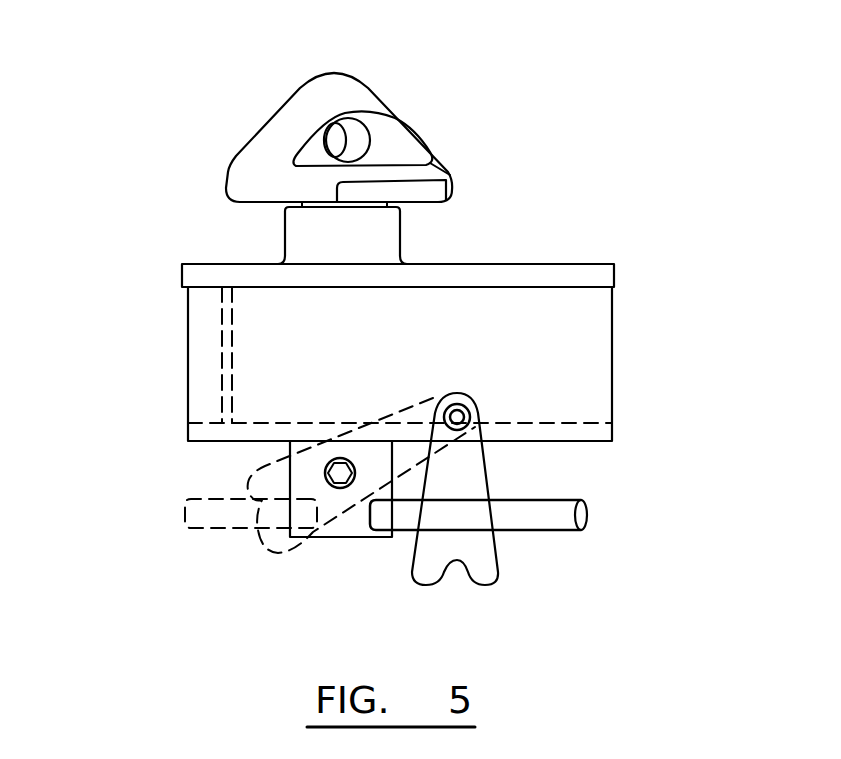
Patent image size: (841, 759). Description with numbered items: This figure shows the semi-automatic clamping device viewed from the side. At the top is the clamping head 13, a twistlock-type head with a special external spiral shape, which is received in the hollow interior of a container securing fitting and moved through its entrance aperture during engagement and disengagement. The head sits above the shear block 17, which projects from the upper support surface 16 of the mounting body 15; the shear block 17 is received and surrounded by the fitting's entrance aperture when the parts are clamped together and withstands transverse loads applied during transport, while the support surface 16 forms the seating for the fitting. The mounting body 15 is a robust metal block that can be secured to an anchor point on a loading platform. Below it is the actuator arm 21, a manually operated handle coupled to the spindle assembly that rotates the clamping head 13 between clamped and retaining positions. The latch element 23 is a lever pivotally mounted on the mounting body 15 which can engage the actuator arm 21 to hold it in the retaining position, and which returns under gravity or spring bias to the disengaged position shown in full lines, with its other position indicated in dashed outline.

The clamping head 13 is at (380, 107).
The mounting body 15 is at (188, 275).
The upper support surface 16 is at (512, 263).
The shear block 17 is at (305, 238).
The actuator arm 21 is at (587, 520).
The latch element 23 is at (477, 473).